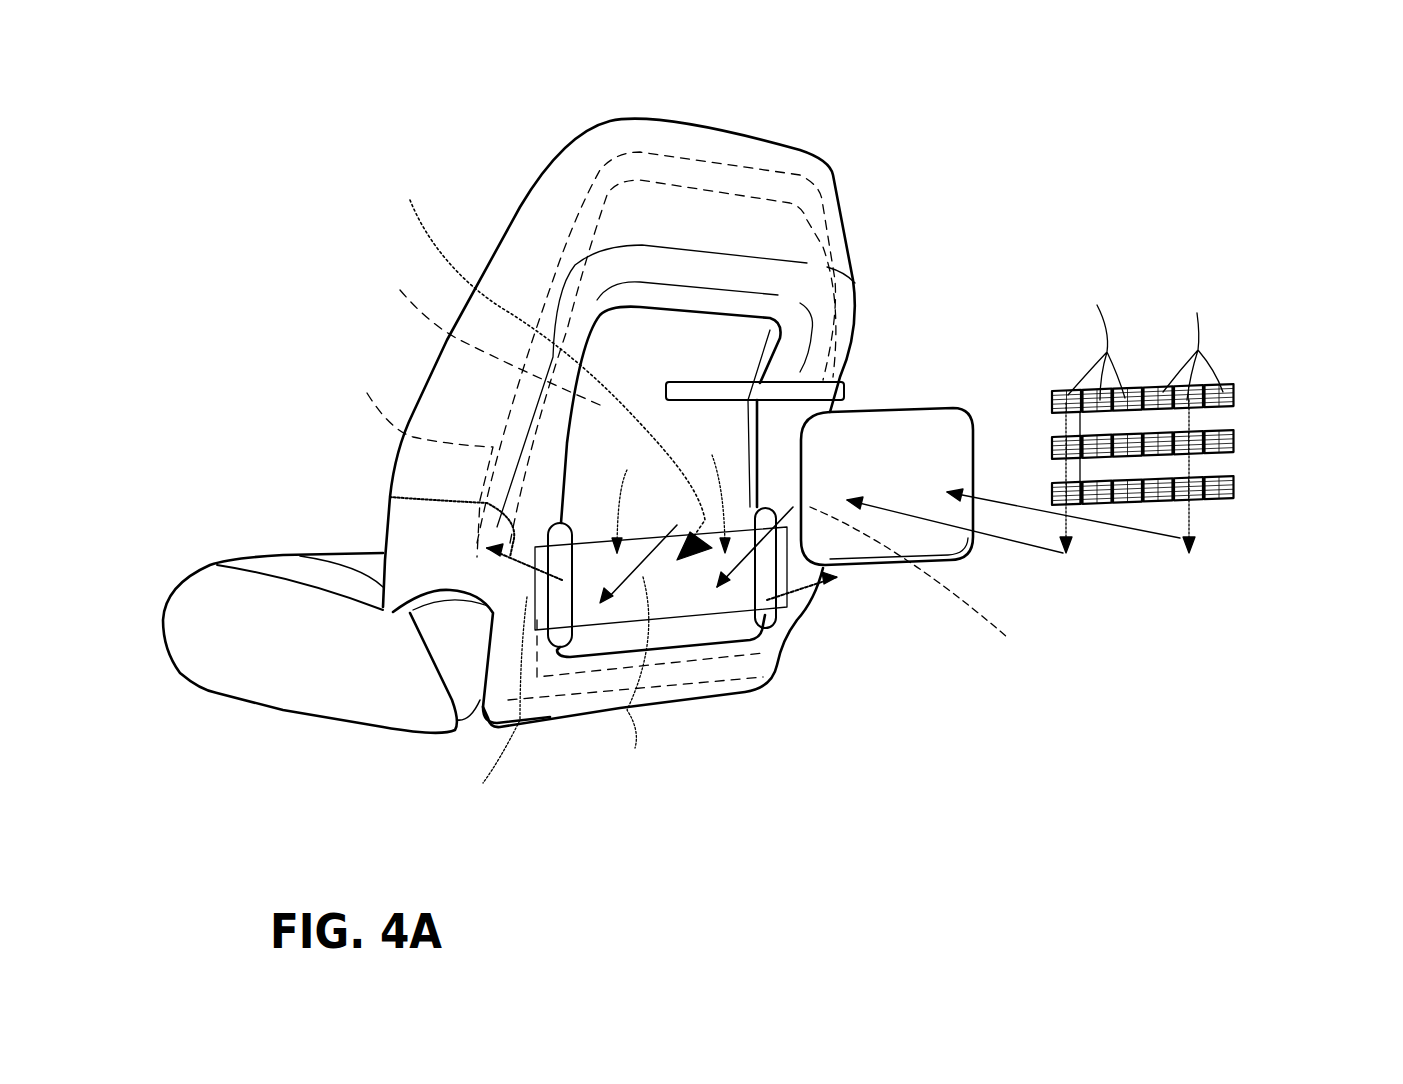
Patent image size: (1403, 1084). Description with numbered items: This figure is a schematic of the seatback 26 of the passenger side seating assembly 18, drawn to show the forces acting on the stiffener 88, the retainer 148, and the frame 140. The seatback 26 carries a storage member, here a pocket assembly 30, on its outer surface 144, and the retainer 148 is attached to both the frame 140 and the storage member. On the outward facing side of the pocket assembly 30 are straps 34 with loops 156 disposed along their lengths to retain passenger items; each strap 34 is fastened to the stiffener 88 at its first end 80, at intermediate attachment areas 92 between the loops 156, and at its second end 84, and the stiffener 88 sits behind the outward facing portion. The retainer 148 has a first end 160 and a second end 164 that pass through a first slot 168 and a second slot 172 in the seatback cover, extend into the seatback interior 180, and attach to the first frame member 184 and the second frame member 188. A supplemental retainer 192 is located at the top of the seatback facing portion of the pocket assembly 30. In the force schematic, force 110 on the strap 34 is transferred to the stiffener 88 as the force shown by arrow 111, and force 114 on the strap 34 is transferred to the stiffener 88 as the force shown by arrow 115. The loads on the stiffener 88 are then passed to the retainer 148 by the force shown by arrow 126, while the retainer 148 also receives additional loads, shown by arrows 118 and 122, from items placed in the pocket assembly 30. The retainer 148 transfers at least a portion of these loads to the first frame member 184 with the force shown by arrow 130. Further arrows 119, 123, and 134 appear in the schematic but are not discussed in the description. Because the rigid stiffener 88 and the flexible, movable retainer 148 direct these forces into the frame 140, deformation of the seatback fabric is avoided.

The passenger side seating assembly 18 is at (290, 547).
The seatback 26 is at (607, 140).
The pocket assembly 30 is at (867, 683).
The strap 34 is at (1233, 395).
The first end 80 is at (1052, 400).
The second end 84 is at (1198, 408).
The stiffener 88 is at (870, 447).
The intermediate attachment areas 92 is at (1213, 425).
The force 110 is at (1067, 523).
The force arrow 111 is at (1000, 540).
The force 114 is at (1190, 515).
The force arrow 115 is at (1015, 497).
The force arrow 118 is at (620, 499).
The air flow 119 is at (696, 644).
The force arrow 122 is at (712, 490).
The air flow 123 is at (800, 413).
The force arrow 126 is at (545, 362).
The force arrow 130 is at (390, 497).
The air flow 134 is at (817, 593).
The frame 140 is at (697, 157).
The outer surface 144 is at (722, 273).
The retainer 148 is at (687, 603).
The loops 156 is at (1145, 336).
The first end 160 is at (518, 668).
The second end 164 is at (823, 568).
The first slot 168 is at (533, 540).
The second slot 172 is at (770, 623).
The seatback interior 180 is at (483, 331).
The first frame member 184 is at (415, 455).
The second frame member 188 is at (936, 586).
The supplemental retainer 192 is at (687, 390).